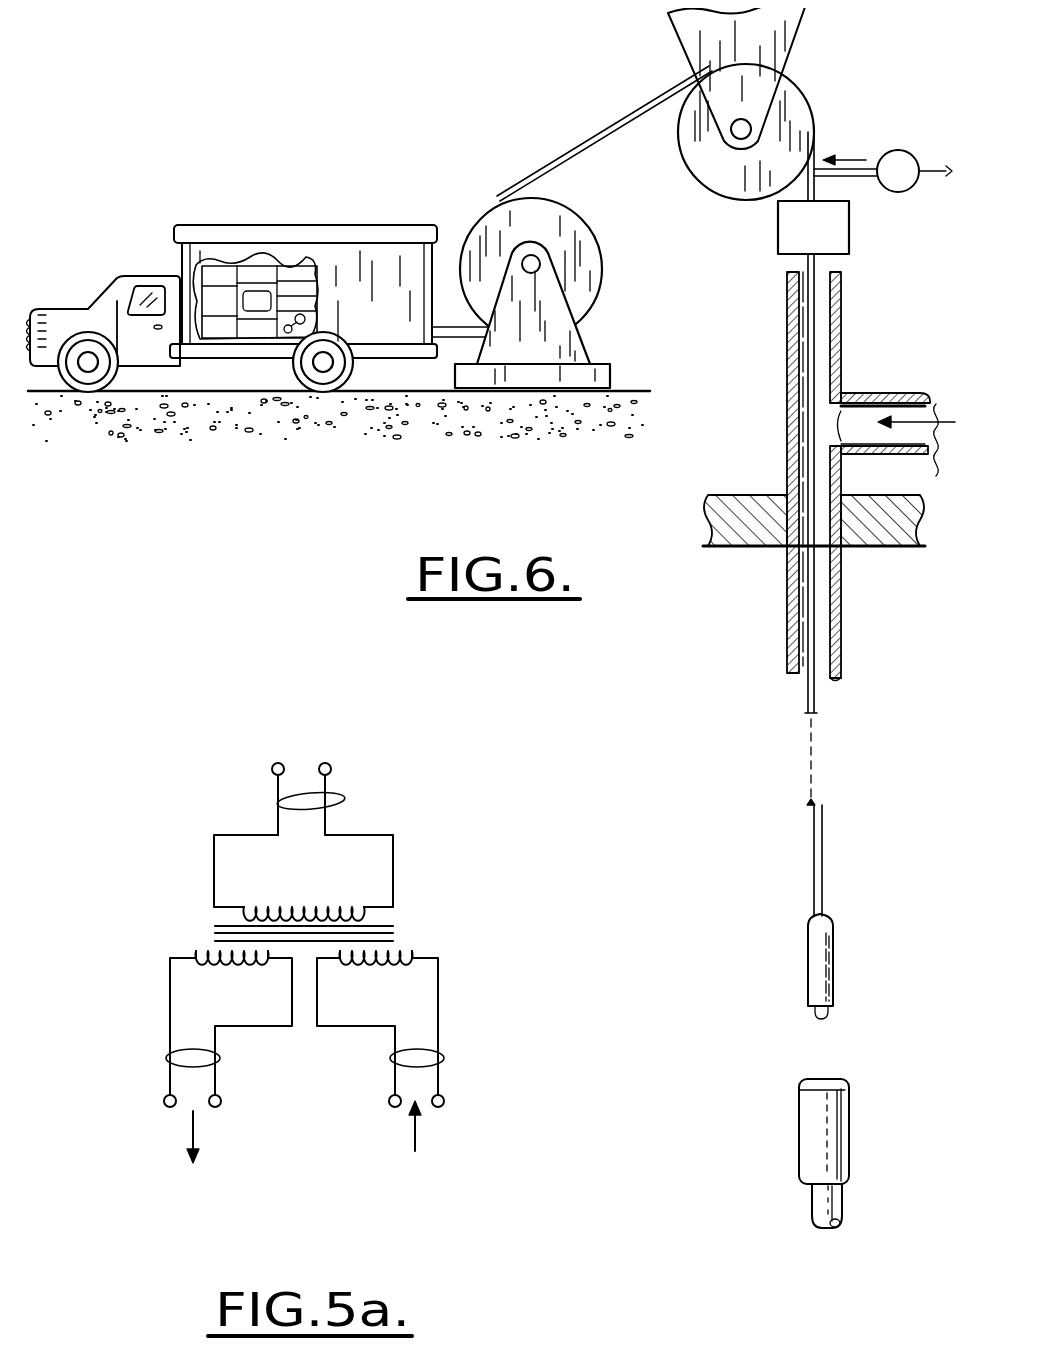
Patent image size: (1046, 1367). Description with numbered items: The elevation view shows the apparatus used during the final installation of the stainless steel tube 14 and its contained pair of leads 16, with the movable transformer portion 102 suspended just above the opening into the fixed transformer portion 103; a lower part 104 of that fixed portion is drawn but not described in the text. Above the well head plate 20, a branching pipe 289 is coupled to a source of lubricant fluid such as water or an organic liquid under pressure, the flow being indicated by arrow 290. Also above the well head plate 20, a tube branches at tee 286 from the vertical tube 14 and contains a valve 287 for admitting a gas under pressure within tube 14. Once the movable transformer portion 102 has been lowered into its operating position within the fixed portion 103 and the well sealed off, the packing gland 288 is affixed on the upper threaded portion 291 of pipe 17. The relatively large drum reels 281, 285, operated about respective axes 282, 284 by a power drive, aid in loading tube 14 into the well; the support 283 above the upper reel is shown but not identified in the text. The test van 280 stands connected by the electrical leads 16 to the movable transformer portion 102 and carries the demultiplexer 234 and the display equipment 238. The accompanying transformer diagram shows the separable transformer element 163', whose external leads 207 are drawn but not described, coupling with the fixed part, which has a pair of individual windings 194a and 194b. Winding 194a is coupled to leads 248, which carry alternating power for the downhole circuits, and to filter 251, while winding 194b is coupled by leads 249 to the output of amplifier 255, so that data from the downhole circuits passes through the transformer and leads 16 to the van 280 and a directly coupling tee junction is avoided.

In FIG. 6, the test van 280 is at (232, 287).
In FIG. 6, the demultiplexer 234 is at (262, 278).
In FIG. 6, the display equipment 238 is at (298, 292).
In FIG. 6, the leads 16 is at (442, 336).
In FIG. 6, the drum reel 281 is at (592, 232).
In FIG. 6, the axis 282 is at (541, 263).
In FIG. 6, the drum reel 285 is at (672, 138).
In FIG. 6, the axis 284 is at (790, 103).
In FIG. 6, the sheave support frame 283 is at (805, 15).
In FIG. 6, the valve 287 is at (898, 149).
In FIG. 6, the tee 286 is at (856, 177).
In FIG. 6, the packing gland 288 is at (778, 220).
In FIG. 6, the upper threaded portion 291 is at (842, 291).
In FIG. 6, the branching pipe 289 is at (878, 392).
In FIG. 6, the arrow 290 is at (916, 448).
In FIG. 6, the well head plate 20 is at (750, 494).
In FIG. 6, the pipe 17 is at (843, 612).
In FIG. 6, the stainless steel tube 14 is at (823, 845).
In FIG. 6, the movable transformer portion 102 is at (834, 968).
In FIG. 6, the fixed transformer portion 103 is at (850, 1125).
In FIG. 6, the sensor probe 104 is at (843, 1210).
In FIG. 5A, the primary leads 207 is at (336, 795).
In FIG. 5A, the separable transformer element 163' is at (303, 888).
In FIG. 5A, the winding 194a is at (188, 947).
In FIG. 5A, the winding 194b is at (420, 949).
In FIG. 5A, the leads 248 is at (170, 1055).
In FIG. 5A, the leads 249 is at (440, 1060).
In FIG. 5A, the filter 251 is at (220, 1223).
In FIG. 5A, the amplifier 255 is at (445, 1215).